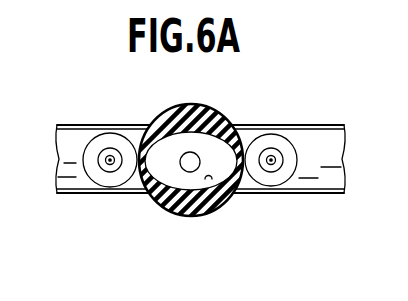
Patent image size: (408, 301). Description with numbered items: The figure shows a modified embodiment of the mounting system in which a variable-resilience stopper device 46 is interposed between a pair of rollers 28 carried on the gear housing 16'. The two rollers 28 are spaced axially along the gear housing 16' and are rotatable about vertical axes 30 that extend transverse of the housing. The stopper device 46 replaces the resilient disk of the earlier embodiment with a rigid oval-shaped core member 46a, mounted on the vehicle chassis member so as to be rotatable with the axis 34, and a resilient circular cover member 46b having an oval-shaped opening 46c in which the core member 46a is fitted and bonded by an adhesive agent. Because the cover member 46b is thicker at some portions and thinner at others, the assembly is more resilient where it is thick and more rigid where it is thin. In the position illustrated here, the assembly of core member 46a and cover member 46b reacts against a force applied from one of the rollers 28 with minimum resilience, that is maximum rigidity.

The gear housing 16' is at (188, 125).
The rollers 28 is at (112, 182).
The vertical axes 30 is at (110, 155).
The axis 34 is at (187, 167).
The variable-resilience stopper device 46 is at (216, 151).
The rigid oval-shaped core member 46a is at (159, 121).
The resilient circular cover member 46b is at (214, 148).
The oval-shaped opening 46c is at (220, 193).